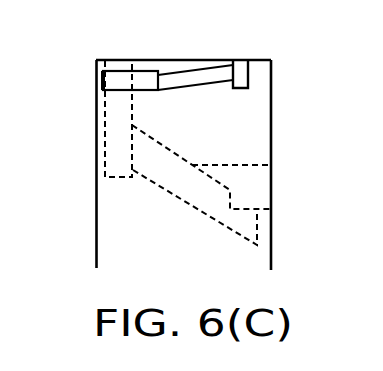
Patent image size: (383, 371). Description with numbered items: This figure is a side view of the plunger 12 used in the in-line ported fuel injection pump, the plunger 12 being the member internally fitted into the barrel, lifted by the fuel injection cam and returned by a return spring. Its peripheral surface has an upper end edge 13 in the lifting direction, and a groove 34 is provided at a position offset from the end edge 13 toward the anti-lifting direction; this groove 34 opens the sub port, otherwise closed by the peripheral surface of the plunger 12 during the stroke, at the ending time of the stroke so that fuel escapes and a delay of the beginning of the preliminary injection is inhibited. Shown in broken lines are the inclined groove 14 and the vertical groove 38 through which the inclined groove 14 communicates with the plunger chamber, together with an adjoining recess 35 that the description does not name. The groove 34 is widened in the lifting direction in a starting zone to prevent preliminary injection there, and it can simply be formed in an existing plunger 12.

The plunger 12 is at (272, 86).
The end edge 13 is at (140, 58).
The inclined groove 14 is at (156, 148).
The groove 34 is at (208, 75).
The stopper 35 is at (262, 189).
The vertical groove 38 is at (112, 125).